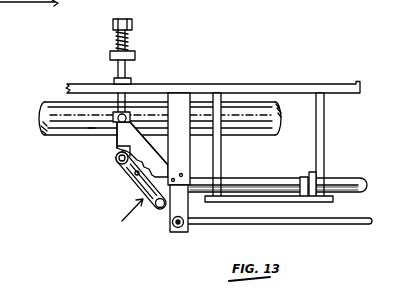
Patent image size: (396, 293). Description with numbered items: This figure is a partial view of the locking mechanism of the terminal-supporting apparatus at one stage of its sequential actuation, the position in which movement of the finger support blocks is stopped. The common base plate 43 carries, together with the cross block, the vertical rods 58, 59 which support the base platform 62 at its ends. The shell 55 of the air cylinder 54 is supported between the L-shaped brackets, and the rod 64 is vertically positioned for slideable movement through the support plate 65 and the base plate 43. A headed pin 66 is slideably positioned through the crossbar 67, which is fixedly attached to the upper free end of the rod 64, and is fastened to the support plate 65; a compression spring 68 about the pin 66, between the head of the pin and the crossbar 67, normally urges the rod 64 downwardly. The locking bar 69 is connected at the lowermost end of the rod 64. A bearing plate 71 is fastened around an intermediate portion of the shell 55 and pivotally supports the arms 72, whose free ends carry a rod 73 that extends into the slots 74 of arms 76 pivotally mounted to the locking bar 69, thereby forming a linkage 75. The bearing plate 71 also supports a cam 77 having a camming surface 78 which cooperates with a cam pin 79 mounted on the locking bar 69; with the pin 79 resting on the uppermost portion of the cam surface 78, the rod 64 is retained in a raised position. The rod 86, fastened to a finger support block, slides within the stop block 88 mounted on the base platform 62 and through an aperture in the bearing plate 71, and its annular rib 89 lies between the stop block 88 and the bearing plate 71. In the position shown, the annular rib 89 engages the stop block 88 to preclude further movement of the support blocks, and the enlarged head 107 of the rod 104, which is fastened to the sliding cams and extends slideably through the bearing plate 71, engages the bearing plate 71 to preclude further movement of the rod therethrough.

The base plate 43 is at (257, 85).
The air cylinder 54 is at (59, 143).
The shell 55 is at (88, 129).
The vertical rod 58 is at (325, 120).
The vertical rod 59 is at (222, 153).
The base platform 62 is at (283, 203).
The rod 64 is at (126, 69).
The support plate 65 is at (113, 82).
The headed pin 66 is at (130, 22).
The crossbar 67 is at (110, 55).
The compression spring 68 is at (129, 38).
The locking bar 69 is at (112, 148).
The bearing plate 71 is at (188, 150).
The arms 72 is at (189, 208).
The rod 73 is at (165, 214).
The slots 74 is at (128, 181).
The linkage 75 is at (123, 217).
The arms 76 is at (118, 166).
The cam 77 is at (158, 161).
The camming surface 78 is at (137, 136).
The cam pin 79 is at (113, 118).
The rod 86 is at (336, 180).
The stop block 88 is at (311, 175).
The annular rib 89 is at (300, 182).
The rod 104 is at (319, 225).
The enlarged head 107 is at (178, 232).